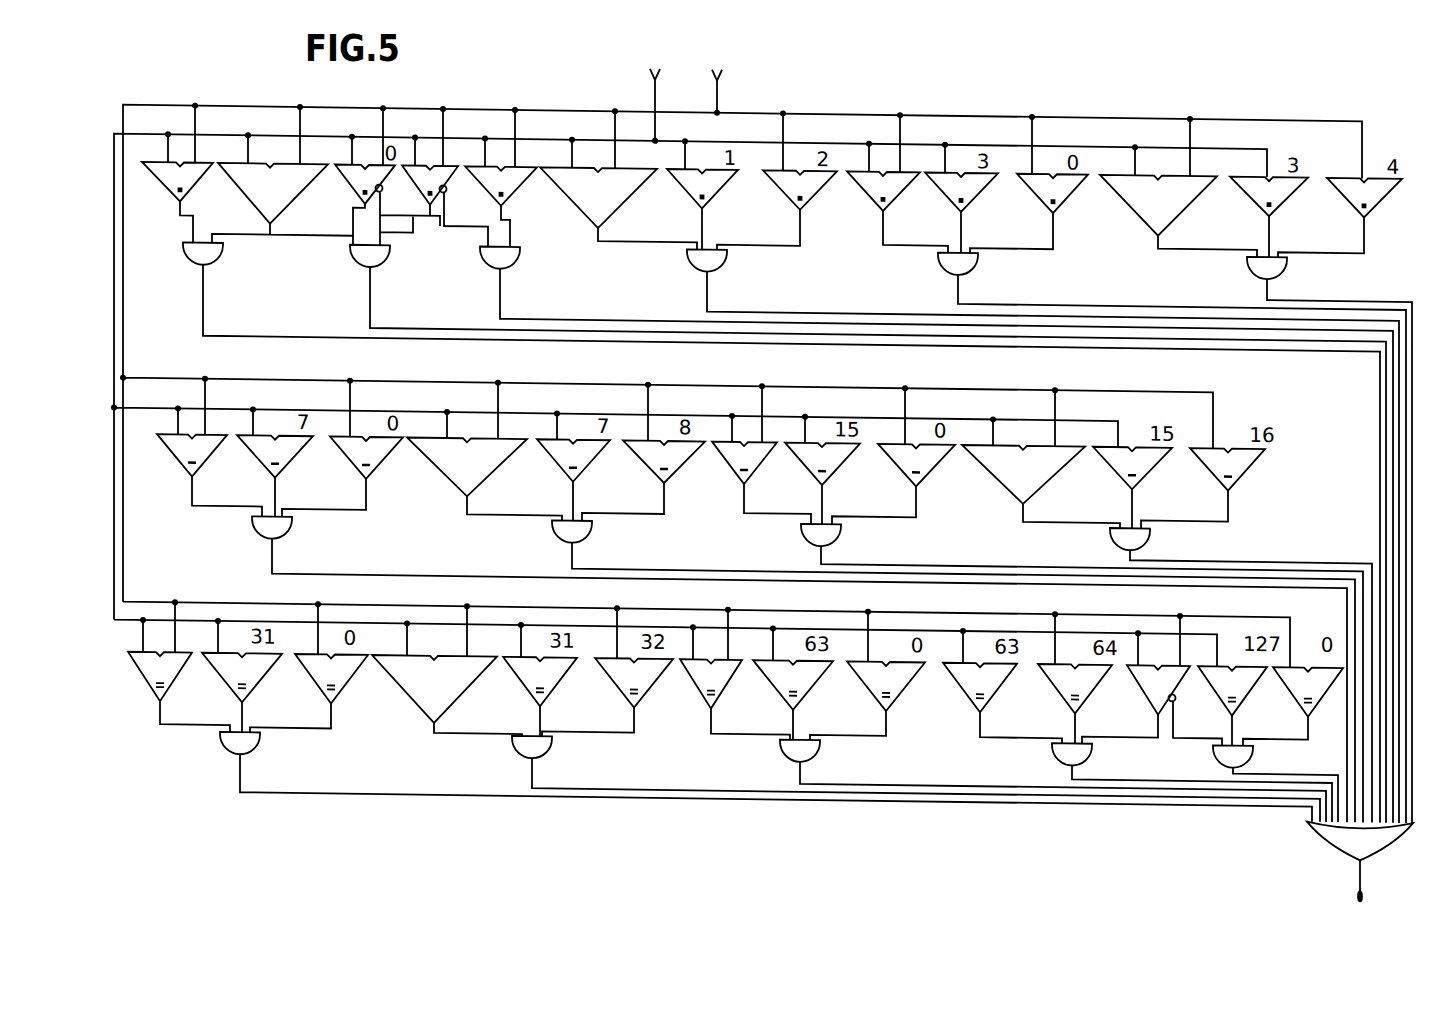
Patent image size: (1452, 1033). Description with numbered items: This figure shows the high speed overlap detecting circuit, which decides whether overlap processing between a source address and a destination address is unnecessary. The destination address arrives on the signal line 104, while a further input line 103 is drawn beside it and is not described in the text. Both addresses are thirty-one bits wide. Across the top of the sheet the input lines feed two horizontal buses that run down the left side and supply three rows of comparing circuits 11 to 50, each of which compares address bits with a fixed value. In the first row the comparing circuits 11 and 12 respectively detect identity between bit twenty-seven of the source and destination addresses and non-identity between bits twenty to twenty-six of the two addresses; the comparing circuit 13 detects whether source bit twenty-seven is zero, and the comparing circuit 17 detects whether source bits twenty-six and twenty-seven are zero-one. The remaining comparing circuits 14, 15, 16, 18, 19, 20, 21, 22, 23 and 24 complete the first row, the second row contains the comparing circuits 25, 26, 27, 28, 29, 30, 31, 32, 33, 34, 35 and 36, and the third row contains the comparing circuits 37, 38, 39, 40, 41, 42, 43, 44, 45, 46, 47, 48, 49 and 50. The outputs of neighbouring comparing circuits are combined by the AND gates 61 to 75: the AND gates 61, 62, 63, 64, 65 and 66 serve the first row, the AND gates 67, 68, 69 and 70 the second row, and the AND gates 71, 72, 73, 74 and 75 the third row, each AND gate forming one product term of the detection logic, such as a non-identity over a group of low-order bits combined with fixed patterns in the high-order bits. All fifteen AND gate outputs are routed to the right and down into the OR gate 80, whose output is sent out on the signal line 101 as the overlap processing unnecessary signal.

The comparing circuit 11 is at (189, 189).
The comparing circuit 12 is at (299, 190).
The comparing circuit 13 is at (374, 189).
The comparing circuit 14 is at (439, 189).
The comparing circuit 15 is at (510, 189).
The comparing circuit 16 is at (627, 190).
The comparing circuit 17 is at (711, 189).
The comparing circuit 18 is at (809, 189).
The comparing circuit 19 is at (892, 189).
The comparing circuit 20 is at (970, 189).
The comparing circuit 21 is at (1062, 189).
The comparing circuit 22 is at (1187, 190).
The comparing circuit 23 is at (1278, 189).
The comparing circuit 24 is at (1373, 189).
The comparing circuit 25 is at (202, 462).
The comparing circuit 26 is at (285, 462).
The comparing circuit 27 is at (376, 462).
The comparing circuit 28 is at (494, 462).
The comparing circuit 29 is at (583, 462).
The comparing circuit 30 is at (674, 462).
The comparing circuit 31 is at (754, 462).
The comparing circuit 32 is at (832, 462).
The comparing circuit 33 is at (926, 462).
The comparing circuit 34 is at (1050, 462).
The comparing circuit 35 is at (1142, 462).
The comparing circuit 36 is at (1238, 462).
The comparing circuit 37 is at (170, 684).
The comparing circuit 38 is at (252, 684).
The comparing circuit 39 is at (341, 686).
The comparing circuit 40 is at (462, 690).
The comparing circuit 41 is at (550, 686).
The comparing circuit 42 is at (644, 686).
The comparing circuit 43 is at (721, 686).
The comparing circuit 44 is at (803, 686).
The comparing circuit 45 is at (896, 686).
The comparing circuit 46 is at (990, 686).
The comparing circuit 47 is at (1085, 686).
The comparing circuit 48 is at (1178, 690).
The comparing circuit 49 is at (1242, 686).
The comparing circuit 50 is at (1322, 684).
The AND gate 61 is at (220, 252).
The AND gate 62 is at (387, 252).
The AND gate 63 is at (517, 252).
The AND gate 64 is at (724, 252).
The AND gate 65 is at (975, 252).
The AND gate 66 is at (1284, 252).
The AND gate 67 is at (289, 525).
The AND gate 68 is at (589, 525).
The AND gate 69 is at (838, 525).
The AND gate 70 is at (1147, 525).
The AND gate 71 is at (257, 741).
The AND gate 72 is at (549, 741).
The AND gate 73 is at (817, 741).
The AND gate 74 is at (1089, 741).
The AND gate 75 is at (1250, 741).
The OR gate 80 is at (1348, 828).
The signal line 101 is at (1358, 861).
The input line 103 is at (676, 105).
The signal line 104 is at (742, 91).